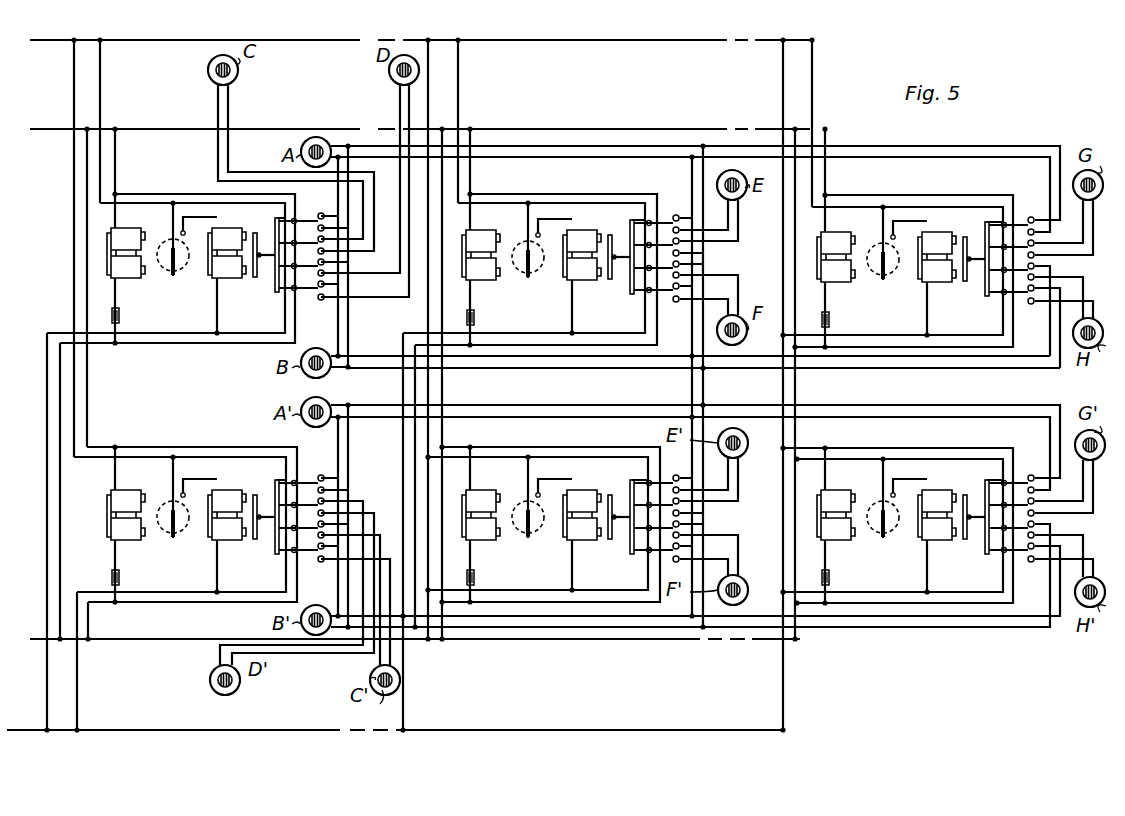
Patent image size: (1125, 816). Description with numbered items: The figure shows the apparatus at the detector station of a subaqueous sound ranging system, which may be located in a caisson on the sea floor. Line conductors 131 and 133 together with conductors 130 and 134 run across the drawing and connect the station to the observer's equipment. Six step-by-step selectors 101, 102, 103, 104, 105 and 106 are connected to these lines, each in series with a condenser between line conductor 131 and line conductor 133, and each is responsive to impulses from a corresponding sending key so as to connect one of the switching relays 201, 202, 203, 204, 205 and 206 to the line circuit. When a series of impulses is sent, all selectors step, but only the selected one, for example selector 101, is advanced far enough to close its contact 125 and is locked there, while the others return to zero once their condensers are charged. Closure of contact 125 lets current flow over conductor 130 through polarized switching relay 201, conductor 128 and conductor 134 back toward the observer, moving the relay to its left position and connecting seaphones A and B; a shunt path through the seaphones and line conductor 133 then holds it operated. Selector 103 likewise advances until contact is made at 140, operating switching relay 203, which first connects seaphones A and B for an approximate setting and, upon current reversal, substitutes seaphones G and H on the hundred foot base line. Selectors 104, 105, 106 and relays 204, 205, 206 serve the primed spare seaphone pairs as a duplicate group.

The selector 101 is at (107, 254).
The selector 102 is at (477, 281).
The selector 103 is at (830, 278).
The selector 104 is at (108, 524).
The selector 105 is at (463, 518).
The selector 106 is at (818, 520).
The switching relay 201 is at (213, 276).
The switching relay 202 is at (564, 278).
The switching relay 203 is at (917, 280).
The switching relay 204 is at (206, 534).
The switching relay 205 is at (564, 538).
The switching relay 206 is at (918, 538).
The contact 125 is at (184, 230).
The contact 140 is at (895, 236).
The conductor 128 is at (48, 483).
The conductor 130 is at (190, 40).
The line conductor 131 is at (186, 129).
The line conductor 133 is at (188, 644).
The conductor 134 is at (239, 730).